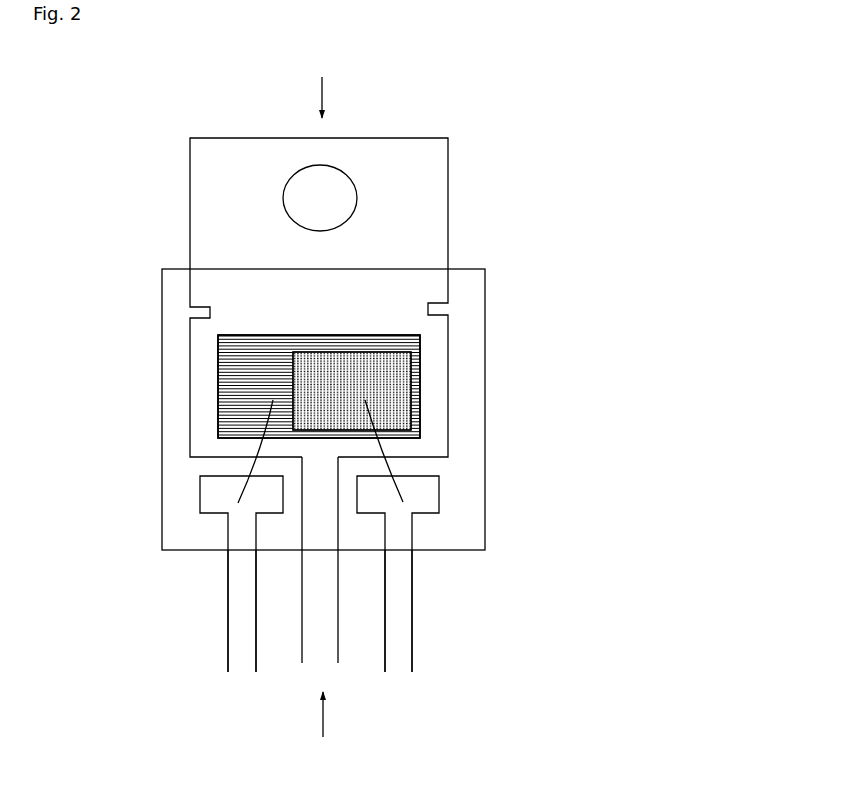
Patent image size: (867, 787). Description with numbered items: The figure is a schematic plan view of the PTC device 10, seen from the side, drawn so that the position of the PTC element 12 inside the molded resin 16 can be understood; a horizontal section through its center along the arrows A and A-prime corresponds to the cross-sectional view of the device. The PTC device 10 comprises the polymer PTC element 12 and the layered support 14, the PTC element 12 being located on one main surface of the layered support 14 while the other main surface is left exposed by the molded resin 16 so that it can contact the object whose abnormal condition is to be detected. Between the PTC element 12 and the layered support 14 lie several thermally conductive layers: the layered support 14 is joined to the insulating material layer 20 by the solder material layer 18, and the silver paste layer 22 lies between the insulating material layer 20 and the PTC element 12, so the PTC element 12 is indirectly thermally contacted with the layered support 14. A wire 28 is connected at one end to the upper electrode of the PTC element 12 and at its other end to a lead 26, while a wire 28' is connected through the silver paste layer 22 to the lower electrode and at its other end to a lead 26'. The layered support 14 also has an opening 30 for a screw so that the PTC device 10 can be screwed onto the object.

The PTC device 10 is at (155, 197).
The PTC element 12 is at (395, 380).
The layered support 14 is at (365, 367).
The molded resin 16 is at (470, 293).
The solder material layer 18 is at (248, 366).
The insulating material layer 20 is at (319, 386).
The silver paste layer 22 is at (239, 386).
The lead 26 is at (447, 621).
The lead 26' is at (206, 631).
The wire 28 is at (468, 558).
The wire 28' is at (175, 557).
The opening 30 is at (325, 185).